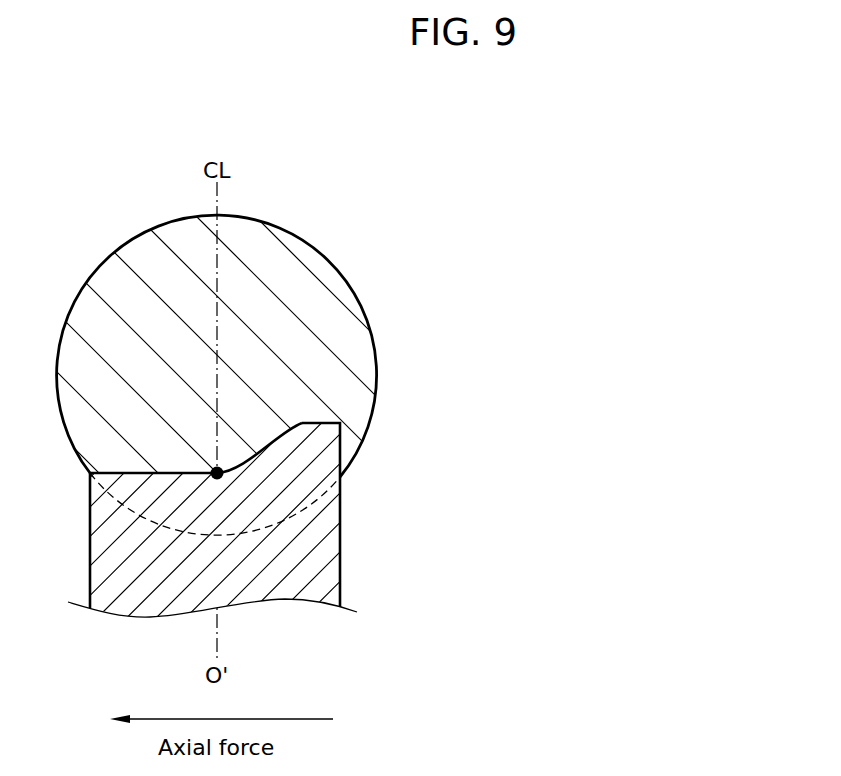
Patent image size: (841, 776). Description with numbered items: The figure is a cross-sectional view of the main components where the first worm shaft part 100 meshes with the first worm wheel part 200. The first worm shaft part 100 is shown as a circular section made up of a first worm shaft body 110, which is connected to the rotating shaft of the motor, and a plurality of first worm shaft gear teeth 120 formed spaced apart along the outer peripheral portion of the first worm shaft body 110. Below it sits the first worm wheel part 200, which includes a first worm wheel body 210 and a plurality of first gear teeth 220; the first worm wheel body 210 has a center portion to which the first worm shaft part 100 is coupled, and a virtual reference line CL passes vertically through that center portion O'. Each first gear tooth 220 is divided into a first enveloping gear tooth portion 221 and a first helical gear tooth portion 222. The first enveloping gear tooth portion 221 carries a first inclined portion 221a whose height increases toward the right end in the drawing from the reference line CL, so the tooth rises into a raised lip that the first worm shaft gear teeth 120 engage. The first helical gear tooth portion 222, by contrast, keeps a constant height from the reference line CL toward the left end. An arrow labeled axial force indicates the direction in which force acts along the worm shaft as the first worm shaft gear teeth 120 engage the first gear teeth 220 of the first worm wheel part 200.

The first worm shaft part 100 is at (299, 399).
The first worm shaft body 110 is at (248, 343).
The first worm shaft gear teeth 120 is at (264, 346).
The first worm wheel part 200 is at (293, 498).
The first worm wheel body 210 is at (313, 563).
The first gear teeth 220 is at (305, 453).
The first enveloping gear tooth portion 221 is at (297, 424).
The first inclined portion 221a is at (278, 443).
The first helical gear tooth portion 222 is at (318, 495).